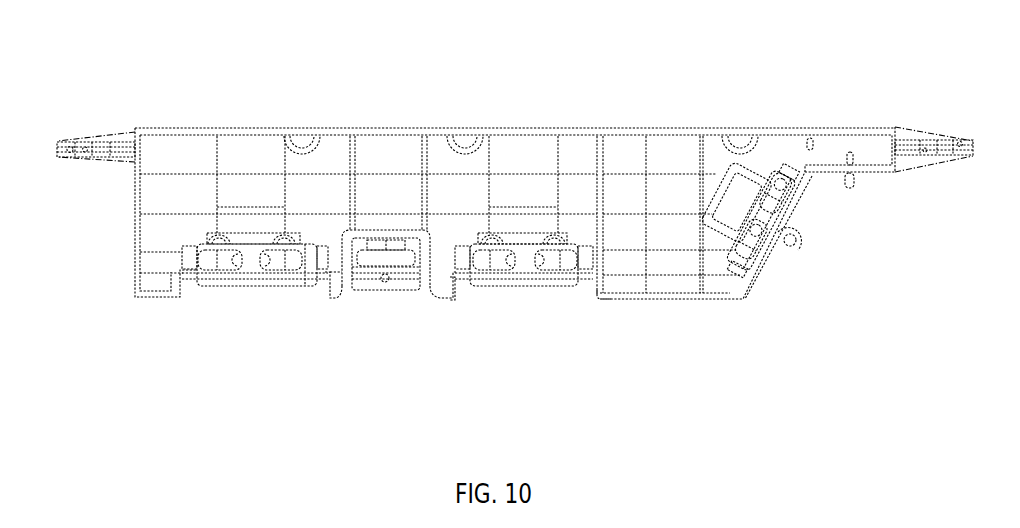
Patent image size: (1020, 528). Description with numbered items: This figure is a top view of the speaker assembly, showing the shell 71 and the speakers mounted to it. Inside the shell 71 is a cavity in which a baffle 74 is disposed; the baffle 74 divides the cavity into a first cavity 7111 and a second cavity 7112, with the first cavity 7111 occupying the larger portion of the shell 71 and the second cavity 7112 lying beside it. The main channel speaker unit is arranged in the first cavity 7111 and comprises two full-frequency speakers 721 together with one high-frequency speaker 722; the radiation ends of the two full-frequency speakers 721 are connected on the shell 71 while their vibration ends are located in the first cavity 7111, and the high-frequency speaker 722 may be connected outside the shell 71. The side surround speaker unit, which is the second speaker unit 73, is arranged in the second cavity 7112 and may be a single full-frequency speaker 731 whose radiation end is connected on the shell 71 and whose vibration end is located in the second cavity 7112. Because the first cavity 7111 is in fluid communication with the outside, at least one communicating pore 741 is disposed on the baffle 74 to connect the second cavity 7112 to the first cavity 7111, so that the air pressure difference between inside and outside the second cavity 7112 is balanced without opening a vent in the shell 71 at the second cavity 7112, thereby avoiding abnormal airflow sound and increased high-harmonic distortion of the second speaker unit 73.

The shell 71 is at (852, 134).
The first cavity 7111 is at (386, 194).
The second cavity 7112 is at (663, 198).
The baffle 74 is at (600, 145).
The communicating pore 741 is at (604, 297).
The full-frequency speaker 721 is at (243, 287).
The high-frequency speaker 722 is at (385, 291).
The second speaker unit 73 is at (796, 250).
The full-frequency speaker 731 is at (792, 252).